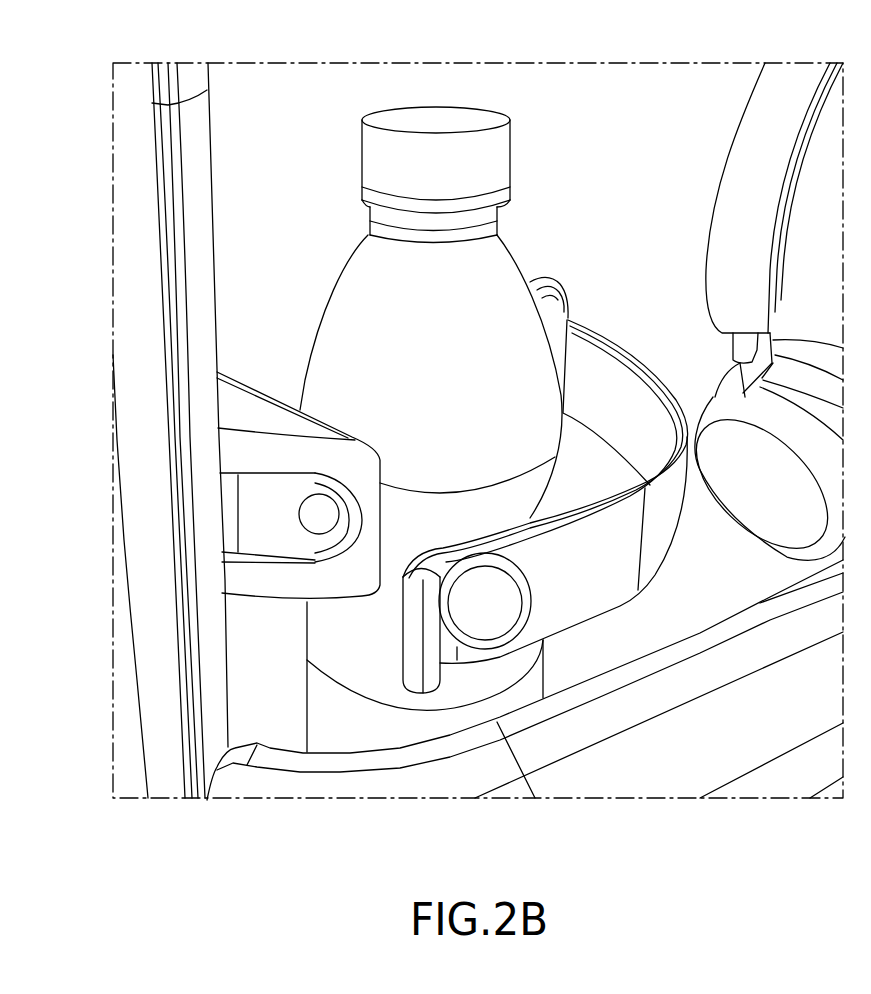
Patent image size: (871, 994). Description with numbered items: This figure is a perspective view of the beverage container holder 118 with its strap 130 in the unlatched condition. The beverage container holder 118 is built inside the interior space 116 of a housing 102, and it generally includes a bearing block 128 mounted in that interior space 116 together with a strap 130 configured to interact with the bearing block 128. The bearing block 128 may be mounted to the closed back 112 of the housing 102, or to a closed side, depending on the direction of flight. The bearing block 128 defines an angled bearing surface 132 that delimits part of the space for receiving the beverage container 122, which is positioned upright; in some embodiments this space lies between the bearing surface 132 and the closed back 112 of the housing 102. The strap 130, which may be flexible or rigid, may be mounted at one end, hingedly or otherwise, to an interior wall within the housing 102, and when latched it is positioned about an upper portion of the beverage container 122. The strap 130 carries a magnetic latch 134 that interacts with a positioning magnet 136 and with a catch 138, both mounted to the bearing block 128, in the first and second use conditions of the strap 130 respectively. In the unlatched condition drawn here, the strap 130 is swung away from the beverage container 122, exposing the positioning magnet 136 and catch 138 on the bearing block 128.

The housing 102 is at (753, 743).
The closed back 112 is at (250, 100).
The interior space 116 is at (625, 102).
The beverage container holder 118 is at (257, 699).
The beverage container 122 is at (433, 272).
The bearing block 128 is at (243, 415).
The strap 130 is at (583, 600).
The angled bearing surface 132 is at (278, 385).
The magnetic latch 134 is at (483, 615).
The positioning magnet 136 is at (318, 520).
The catch 138 is at (357, 525).